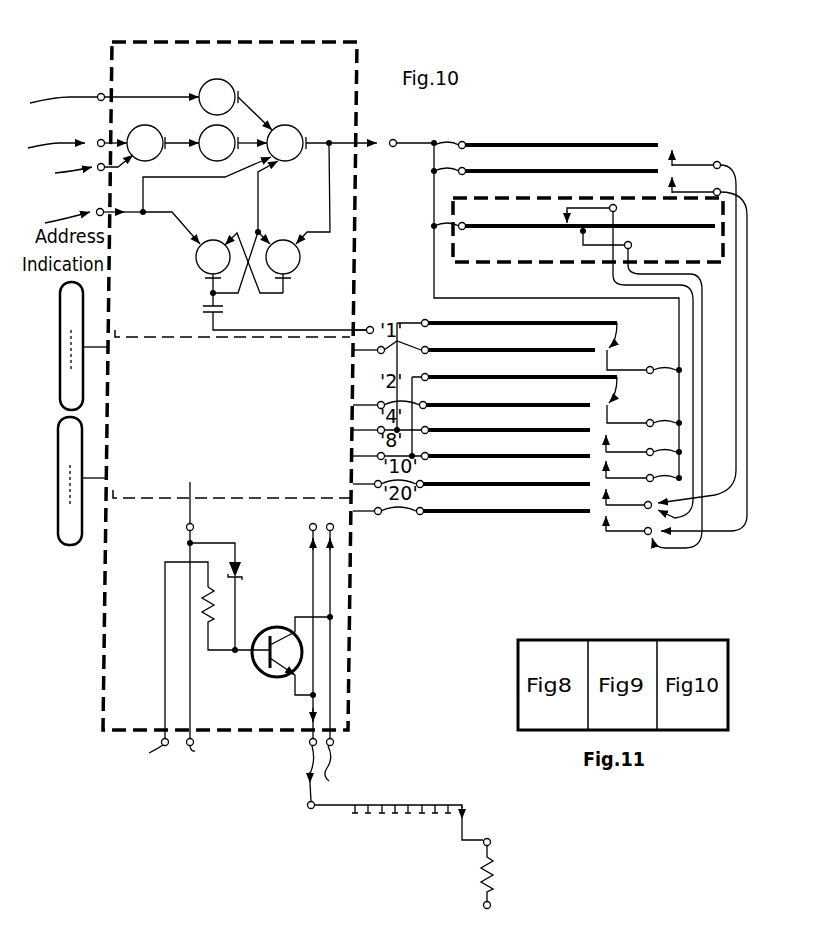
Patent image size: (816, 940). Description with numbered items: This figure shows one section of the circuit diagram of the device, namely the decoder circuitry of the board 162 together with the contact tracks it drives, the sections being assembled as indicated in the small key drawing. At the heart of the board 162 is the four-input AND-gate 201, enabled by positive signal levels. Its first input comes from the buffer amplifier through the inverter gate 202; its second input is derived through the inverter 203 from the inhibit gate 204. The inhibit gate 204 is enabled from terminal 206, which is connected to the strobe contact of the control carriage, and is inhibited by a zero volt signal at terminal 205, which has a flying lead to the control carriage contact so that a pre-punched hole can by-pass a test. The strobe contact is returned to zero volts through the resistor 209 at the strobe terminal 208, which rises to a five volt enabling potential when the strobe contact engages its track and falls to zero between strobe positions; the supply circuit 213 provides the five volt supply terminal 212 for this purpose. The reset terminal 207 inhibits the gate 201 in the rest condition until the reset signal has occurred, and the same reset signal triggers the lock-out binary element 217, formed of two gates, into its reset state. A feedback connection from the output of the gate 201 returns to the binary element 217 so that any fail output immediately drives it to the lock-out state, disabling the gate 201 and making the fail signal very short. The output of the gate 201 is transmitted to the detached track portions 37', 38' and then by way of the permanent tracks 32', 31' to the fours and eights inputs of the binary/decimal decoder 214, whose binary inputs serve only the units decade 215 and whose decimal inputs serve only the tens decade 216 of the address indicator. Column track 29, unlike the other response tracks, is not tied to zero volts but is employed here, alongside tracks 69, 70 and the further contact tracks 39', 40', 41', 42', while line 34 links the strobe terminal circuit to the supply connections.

The board 162 is at (279, 42).
The four-input AND-gate 201 is at (299, 129).
The inverter gate 202 is at (230, 84).
The inverter 203 is at (204, 128).
The inhibit gate 204 is at (130, 128).
The terminal 205 is at (99, 140).
The terminal 206 is at (98, 167).
The reset terminal 207 is at (100, 210).
The 5 volt supply terminal 212 is at (309, 743).
The supply circuit 213 is at (228, 622).
The binary/decimal decoder 214 is at (231, 414).
The units decade 215 is at (60, 314).
The tens decade 216 is at (58, 518).
The lock-out binary element 217 is at (285, 287).
The connecting line 34 is at (339, 806).
The strobe terminal 208 is at (500, 831).
The resistor 209 is at (482, 880).
The contact bar 69 is at (540, 144).
The contact bar 70 is at (514, 173).
The column track 29 is at (514, 230).
The column track 32' is at (505, 377).
The column track 37' is at (517, 357).
The column track 31' is at (513, 417).
The column track 38' is at (517, 414).
The contact bar 39' is at (517, 441).
The contact bar 40' is at (517, 467).
The contact bar 41' is at (502, 494).
The contact bar 42' is at (502, 521).